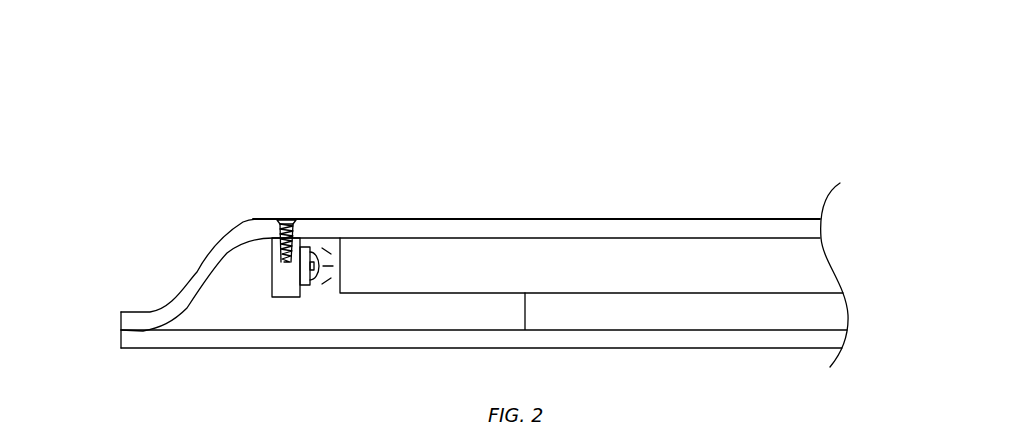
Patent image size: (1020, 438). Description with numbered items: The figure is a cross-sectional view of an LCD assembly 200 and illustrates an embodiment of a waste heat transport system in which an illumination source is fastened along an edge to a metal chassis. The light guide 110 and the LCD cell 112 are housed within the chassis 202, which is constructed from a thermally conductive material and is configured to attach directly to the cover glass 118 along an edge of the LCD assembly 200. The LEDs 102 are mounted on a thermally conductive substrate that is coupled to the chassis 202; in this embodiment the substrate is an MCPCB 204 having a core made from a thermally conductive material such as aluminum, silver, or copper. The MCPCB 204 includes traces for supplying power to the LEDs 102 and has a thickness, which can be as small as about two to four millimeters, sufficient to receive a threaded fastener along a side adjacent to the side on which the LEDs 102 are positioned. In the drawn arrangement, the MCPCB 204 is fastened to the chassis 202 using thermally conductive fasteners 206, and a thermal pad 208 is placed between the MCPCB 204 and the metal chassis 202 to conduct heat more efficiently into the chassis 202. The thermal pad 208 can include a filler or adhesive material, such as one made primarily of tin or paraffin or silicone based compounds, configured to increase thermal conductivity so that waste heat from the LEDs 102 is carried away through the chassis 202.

The LCD assembly 200 is at (212, 98).
The LEDs 102 is at (302, 247).
The chassis 202 is at (415, 218).
The thermally conductive fasteners 206 is at (260, 219).
The thermal pad 208 is at (250, 242).
The MCPCB 204 is at (272, 268).
The light guide 110 is at (827, 247).
The LCD cell 112 is at (848, 307).
The cover glass 118 is at (120, 340).